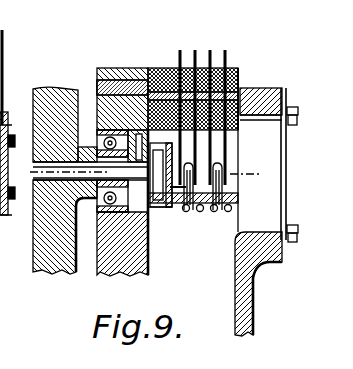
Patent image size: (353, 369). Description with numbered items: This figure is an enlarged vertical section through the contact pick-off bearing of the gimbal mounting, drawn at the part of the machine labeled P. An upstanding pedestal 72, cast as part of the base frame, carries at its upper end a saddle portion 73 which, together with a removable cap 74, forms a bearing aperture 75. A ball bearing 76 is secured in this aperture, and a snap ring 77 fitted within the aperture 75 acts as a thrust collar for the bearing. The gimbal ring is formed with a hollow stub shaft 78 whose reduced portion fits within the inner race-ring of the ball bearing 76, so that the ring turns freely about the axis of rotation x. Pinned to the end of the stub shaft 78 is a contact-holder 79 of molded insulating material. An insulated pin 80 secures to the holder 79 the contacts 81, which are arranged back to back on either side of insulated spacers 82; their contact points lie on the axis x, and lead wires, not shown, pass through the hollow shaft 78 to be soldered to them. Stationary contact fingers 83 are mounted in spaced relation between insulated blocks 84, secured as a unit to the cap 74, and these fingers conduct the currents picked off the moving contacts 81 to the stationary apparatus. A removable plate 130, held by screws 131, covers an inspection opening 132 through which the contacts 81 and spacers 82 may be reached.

The pump casing P is at (51, 263).
The upstanding pedestal 72 is at (148, 272).
The saddle portion 73 is at (150, 225).
The removable cap 74 is at (112, 68).
The bearing aperture 75 is at (142, 136).
The ball bearing 76 is at (100, 207).
The snap ring 77 is at (120, 224).
The hollow stub shaft 78 is at (100, 140).
The contact-holder 79 is at (165, 207).
The insulated pin 80 is at (228, 190).
The contacts 81 is at (223, 165).
The insulated spacers 82 is at (197, 212).
The stationary contact fingers 83 is at (226, 52).
The insulated blocks 84 is at (180, 64).
The removable plate 130 is at (12, 133).
The screws 131 is at (15, 143).
The inspection opening 132 is at (240, 240).
The axis of rotation x is at (143, 174).